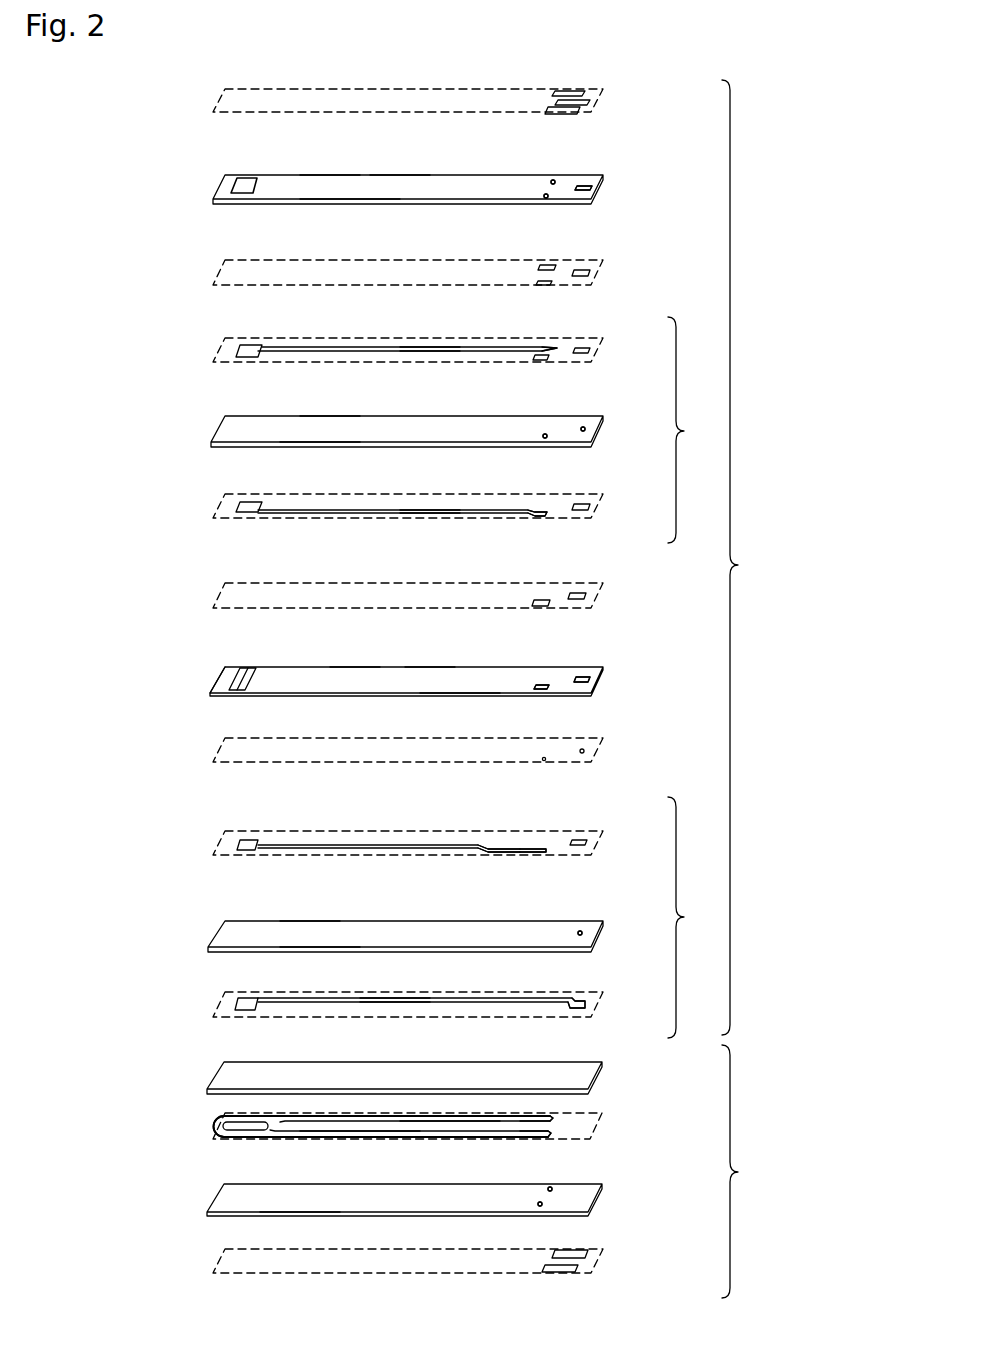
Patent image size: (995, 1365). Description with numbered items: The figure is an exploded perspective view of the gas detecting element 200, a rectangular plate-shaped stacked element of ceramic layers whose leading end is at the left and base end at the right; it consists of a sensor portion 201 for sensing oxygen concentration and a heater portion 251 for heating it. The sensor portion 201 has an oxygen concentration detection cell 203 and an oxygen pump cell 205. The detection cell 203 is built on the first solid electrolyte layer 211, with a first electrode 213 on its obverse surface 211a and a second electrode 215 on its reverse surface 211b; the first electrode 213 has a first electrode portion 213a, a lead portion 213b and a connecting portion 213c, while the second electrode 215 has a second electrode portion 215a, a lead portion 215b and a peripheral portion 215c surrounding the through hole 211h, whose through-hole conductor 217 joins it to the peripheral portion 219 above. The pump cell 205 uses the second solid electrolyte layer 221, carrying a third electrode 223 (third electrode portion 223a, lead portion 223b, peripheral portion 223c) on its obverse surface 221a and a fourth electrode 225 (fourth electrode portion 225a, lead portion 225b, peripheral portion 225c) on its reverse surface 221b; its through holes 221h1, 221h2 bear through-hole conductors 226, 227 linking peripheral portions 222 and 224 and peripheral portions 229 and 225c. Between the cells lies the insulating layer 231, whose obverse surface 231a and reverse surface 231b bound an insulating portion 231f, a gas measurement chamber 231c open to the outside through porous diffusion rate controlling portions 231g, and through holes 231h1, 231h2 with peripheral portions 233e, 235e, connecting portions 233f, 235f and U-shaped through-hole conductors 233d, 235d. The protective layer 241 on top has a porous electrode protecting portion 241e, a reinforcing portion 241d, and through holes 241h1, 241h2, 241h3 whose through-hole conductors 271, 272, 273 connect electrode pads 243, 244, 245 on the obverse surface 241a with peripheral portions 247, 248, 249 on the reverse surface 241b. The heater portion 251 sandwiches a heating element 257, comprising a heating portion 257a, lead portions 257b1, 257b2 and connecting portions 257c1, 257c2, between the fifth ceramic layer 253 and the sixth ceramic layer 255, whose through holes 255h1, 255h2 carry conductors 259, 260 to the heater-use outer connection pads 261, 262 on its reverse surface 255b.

The gas detecting element 200 is at (147, 305).
The sensor portion 201 is at (752, 557).
The oxygen concentration detection cell 203 is at (698, 917).
The oxygen pump cell 205 is at (698, 430).
The heater portion 251 is at (752, 1171).
The first solid electrolyte layer 211 is at (236, 935).
The obverse surface 211a is at (310, 935).
The reverse surface 211b is at (300, 952).
The through hole 211h is at (579, 931).
The first electrode 213 is at (308, 845).
The first electrode portion 213a is at (245, 844).
The lead portion 213b is at (470, 849).
The connecting portion 213c is at (540, 853).
The second electrode 215 is at (277, 1003).
The second electrode portion 215a is at (243, 1003).
The lead portion 215b is at (394, 1003).
The peripheral portion 215c is at (575, 1009).
The through-hole conductor 217 is at (582, 930).
The peripheral portion 219 is at (580, 840).
The second solid electrolyte layer 221 is at (236, 423).
The obverse surface 221a is at (310, 430).
The reverse surface 221b is at (300, 448).
The through hole 221h1 is at (584, 427).
The through hole 221h2 is at (545, 433).
The third electrode 223 is at (322, 345).
The third electrode portion 223a is at (245, 350).
The lead portion 223b is at (420, 352).
The peripheral portion 223c is at (548, 346).
The fourth electrode 225 is at (320, 505).
The fourth electrode portion 225a is at (245, 506).
The lead portion 225b is at (422, 515).
The peripheral portion 225c is at (540, 517).
The peripheral portion 222 is at (592, 351).
The peripheral portion 224 is at (592, 507).
The through-hole conductor 226 is at (586, 431).
The through-hole conductor 227 is at (546, 440).
The peripheral portion 229 is at (541, 362).
The insulating layer 231 is at (235, 676).
The obverse surface 231a is at (430, 682).
The reverse surface 231b is at (466, 694).
The gas measurement chamber 231c is at (242, 672).
The insulating portion 231f is at (353, 682).
The diffusion rate controlling portion 231g is at (250, 668).
The through hole 231h1 is at (585, 677).
The through hole 231h2 is at (540, 684).
The through-hole conductor 233d is at (580, 684).
The peripheral portion 233e is at (576, 594).
The connecting portion 233f is at (585, 752).
The through-hole conductor 235d is at (539, 690).
The peripheral portion 235e is at (540, 600).
The connecting portion 235f is at (543, 761).
The protective layer 241 is at (238, 181).
The obverse surface 241a is at (400, 186).
The reverse surface 241b is at (352, 200).
The reinforcing portion 241d is at (330, 186).
The electrode protecting portion 241e is at (254, 174).
The through hole 241h1 is at (588, 192).
The through hole 241h2 is at (547, 198).
The through hole 241h3 is at (553, 180).
The electrode pad 243 is at (590, 102).
The electrode pad 244 is at (556, 110).
The electrode pad 245 is at (585, 92).
The peripheral portion 247 is at (592, 273).
The peripheral portion 248 is at (544, 286).
The peripheral portion 249 is at (548, 265).
The fifth ceramic layer 253 is at (235, 1075).
The sixth ceramic layer 255 is at (235, 1196).
The reverse surface 255b is at (266, 1216).
The through hole 255h1 is at (538, 1205).
The through hole 255h2 is at (552, 1188).
The heating element 257 is at (230, 1118).
The heating portion 257a is at (230, 1138).
The lead portion 257b1 is at (355, 1138).
The lead portion 257b2 is at (440, 1122).
The connecting portion 257c1 is at (549, 1136).
The connecting portion 257c2 is at (553, 1118).
The conductor 259 is at (542, 1207).
The conductor 260 is at (552, 1191).
The heater-use outer connection pad 261 is at (562, 1272).
The heater-use outer connection pad 262 is at (570, 1255).
The through-hole conductor 271 is at (593, 188).
The through-hole conductor 272 is at (544, 198).
The through-hole conductor 273 is at (555, 180).